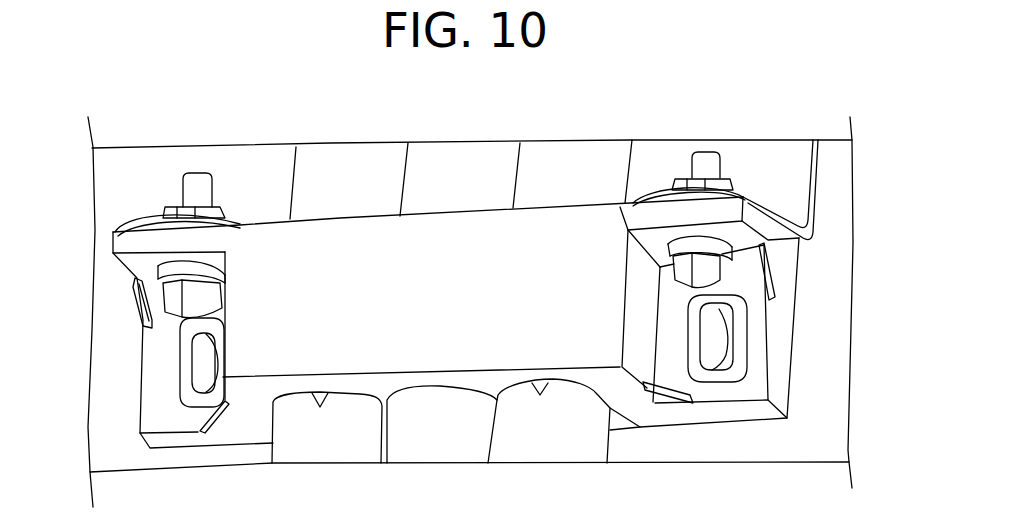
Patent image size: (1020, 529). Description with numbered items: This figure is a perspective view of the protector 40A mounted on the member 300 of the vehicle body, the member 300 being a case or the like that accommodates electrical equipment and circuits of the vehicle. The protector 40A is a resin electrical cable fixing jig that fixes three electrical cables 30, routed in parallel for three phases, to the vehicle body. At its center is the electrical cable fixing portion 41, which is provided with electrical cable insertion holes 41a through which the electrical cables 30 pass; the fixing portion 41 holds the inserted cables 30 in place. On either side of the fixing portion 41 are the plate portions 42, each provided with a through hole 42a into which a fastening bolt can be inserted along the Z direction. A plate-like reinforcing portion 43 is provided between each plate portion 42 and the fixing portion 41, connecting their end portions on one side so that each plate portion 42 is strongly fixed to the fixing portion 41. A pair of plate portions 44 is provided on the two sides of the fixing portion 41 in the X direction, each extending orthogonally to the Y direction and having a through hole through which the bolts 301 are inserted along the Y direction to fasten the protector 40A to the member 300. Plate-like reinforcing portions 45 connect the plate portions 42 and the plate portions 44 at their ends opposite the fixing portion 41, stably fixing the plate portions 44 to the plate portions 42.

The member 300 is at (773, 179).
The bolts 301 is at (197, 293).
The electrical cables 30 is at (368, 172).
The protector 40A is at (248, 218).
The electrical cable fixing portion 41 is at (432, 338).
The electrical cable insertion holes 41a is at (313, 393).
The plate portions 42 is at (160, 407).
The through hole 42a is at (195, 377).
The reinforcing portion 43 is at (220, 423).
The plate portions 44 is at (178, 243).
The reinforcing portions 45 is at (140, 303).